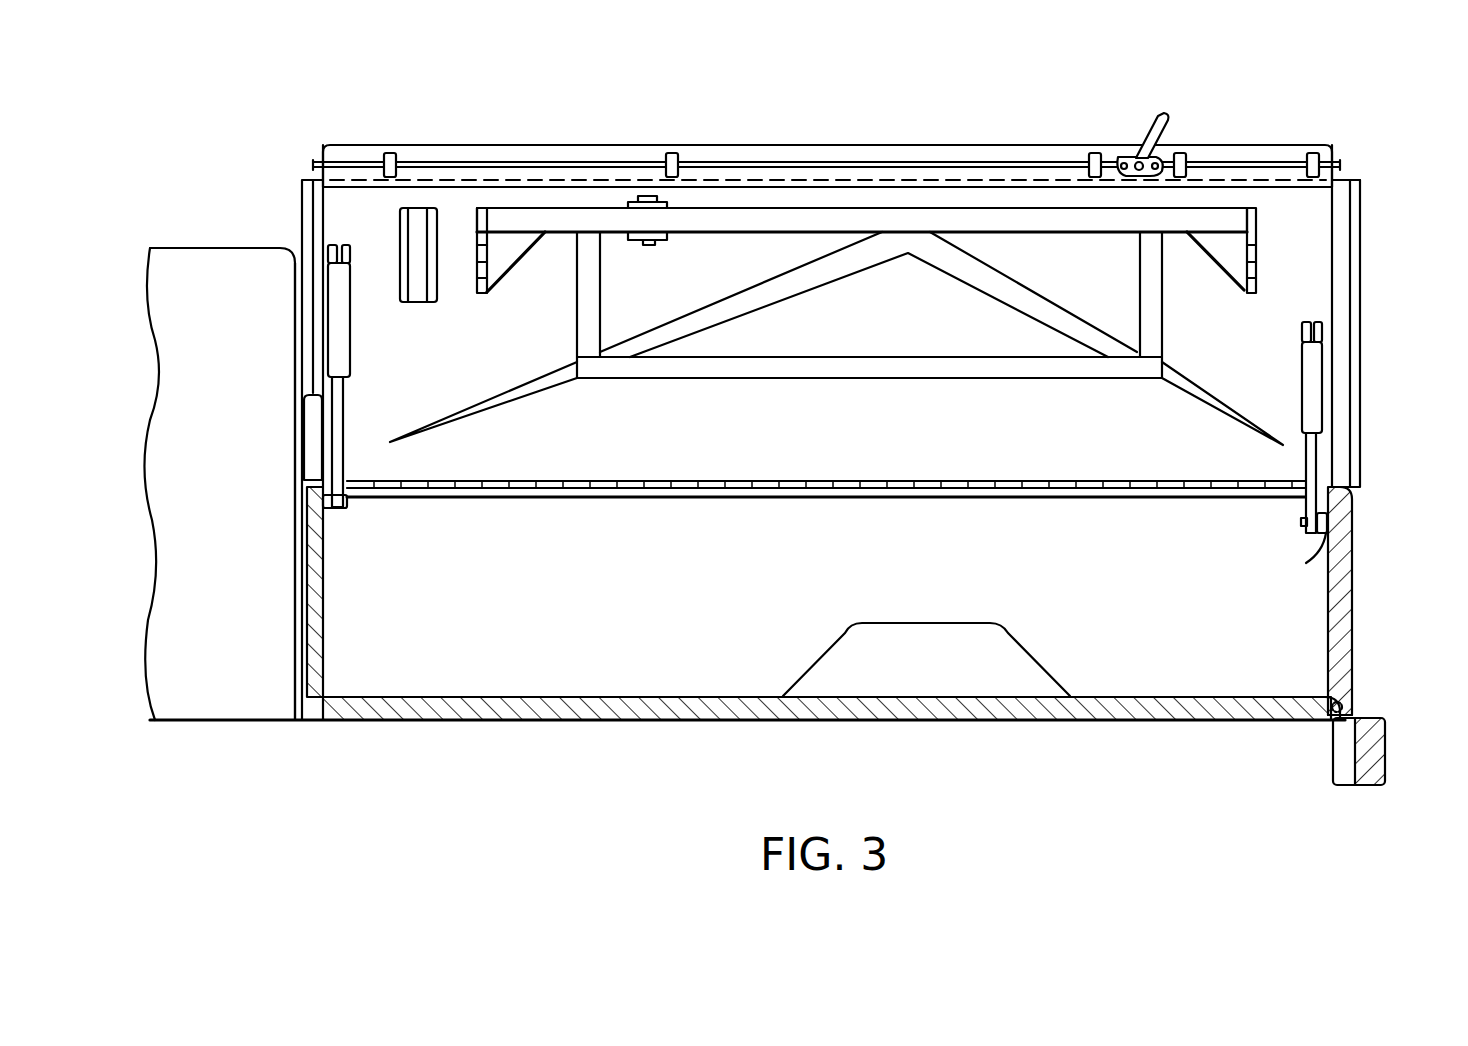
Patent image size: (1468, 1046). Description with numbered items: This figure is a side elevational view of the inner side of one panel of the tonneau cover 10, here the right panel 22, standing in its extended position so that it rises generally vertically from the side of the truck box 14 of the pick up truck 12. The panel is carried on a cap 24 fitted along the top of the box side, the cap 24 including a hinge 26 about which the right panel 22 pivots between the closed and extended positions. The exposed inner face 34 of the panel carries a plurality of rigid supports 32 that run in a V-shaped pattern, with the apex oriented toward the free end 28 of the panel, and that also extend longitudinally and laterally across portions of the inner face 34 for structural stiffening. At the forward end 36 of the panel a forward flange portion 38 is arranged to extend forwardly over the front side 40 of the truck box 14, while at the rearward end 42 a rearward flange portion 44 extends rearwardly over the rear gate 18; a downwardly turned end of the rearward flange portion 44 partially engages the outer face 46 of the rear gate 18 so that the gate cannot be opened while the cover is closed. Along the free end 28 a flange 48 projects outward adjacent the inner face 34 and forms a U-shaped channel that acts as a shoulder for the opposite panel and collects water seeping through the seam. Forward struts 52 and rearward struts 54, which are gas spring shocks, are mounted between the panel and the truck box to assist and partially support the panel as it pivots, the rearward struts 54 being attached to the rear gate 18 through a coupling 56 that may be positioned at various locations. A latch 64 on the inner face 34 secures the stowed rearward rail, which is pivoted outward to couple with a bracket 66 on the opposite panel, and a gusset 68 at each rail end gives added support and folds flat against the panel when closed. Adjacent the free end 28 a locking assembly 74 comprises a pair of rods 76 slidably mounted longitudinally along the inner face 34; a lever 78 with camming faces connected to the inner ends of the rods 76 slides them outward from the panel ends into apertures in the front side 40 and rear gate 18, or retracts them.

The tonneau cover 10 is at (298, 112).
The pick up truck 12 is at (380, 745).
The truck box 14 is at (604, 665).
The rear gate 18 is at (1310, 608).
The right panel 22 is at (776, 135).
The cap 24 is at (1043, 470).
The hinge 26 is at (831, 470).
The free end 28 is at (571, 178).
The rigid supports 32 is at (598, 283).
The inner face 34 is at (612, 458).
The forward end 36 is at (330, 202).
The forward flange portion 38 is at (318, 396).
The front side 40 is at (340, 584).
The rearward end 42 is at (1325, 230).
The rearward flange portion 44 is at (1362, 282).
The outer face 46 is at (1360, 586).
The flange 48 is at (712, 140).
The forward struts 52 is at (350, 330).
The rearward struts 54 is at (1302, 393).
The coupling 56 is at (1318, 528).
The latch 64 is at (662, 240).
The bracket 66 is at (440, 275).
The gusset 68 is at (492, 260).
The locking assembly 74 is at (1128, 128).
The rods 76 is at (876, 158).
The lever 78 is at (1161, 116).